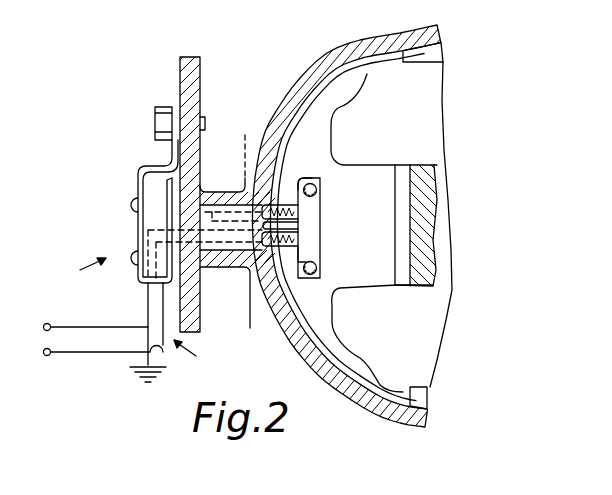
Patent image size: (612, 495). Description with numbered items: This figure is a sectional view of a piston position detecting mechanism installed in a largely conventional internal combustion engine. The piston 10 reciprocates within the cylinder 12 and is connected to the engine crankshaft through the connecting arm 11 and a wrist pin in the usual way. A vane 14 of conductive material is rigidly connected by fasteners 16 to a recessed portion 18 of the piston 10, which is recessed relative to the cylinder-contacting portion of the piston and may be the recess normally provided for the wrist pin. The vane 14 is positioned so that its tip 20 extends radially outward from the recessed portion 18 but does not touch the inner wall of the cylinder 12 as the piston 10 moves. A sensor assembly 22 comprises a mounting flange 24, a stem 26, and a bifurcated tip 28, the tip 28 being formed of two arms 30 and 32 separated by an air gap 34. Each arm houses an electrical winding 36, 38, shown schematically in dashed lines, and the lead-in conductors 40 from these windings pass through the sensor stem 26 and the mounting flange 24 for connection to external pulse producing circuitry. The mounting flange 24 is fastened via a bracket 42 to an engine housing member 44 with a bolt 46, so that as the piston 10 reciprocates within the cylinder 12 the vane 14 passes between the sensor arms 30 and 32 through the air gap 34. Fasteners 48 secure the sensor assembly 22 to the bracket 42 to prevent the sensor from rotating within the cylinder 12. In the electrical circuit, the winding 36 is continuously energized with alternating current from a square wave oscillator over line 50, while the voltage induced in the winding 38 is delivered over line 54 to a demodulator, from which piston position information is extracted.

The piston 10 is at (392, 372).
The connecting arm 11 is at (418, 278).
The cylinder 12 is at (318, 76).
The vane 14 is at (318, 243).
The fasteners 16 is at (320, 190).
The recessed portion 18 is at (283, 340).
The tip 20 is at (284, 227).
The sensor assembly 22 is at (75, 272).
The mounting flange 24 is at (150, 222).
The stem 26 is at (210, 220).
The bifurcated tip 28 is at (310, 178).
The arm 30 is at (268, 286).
The arm 32 is at (273, 204).
The air gap 34 is at (270, 242).
The electrical winding 36 is at (312, 253).
The electrical winding 38 is at (254, 145).
The lead-in conductors 40 is at (177, 332).
The bracket 42 is at (142, 178).
The engine housing member 44 is at (181, 78).
The bolt 46 is at (157, 123).
The fasteners 48 is at (131, 206).
The line 50 is at (120, 352).
The line 54 is at (113, 327).